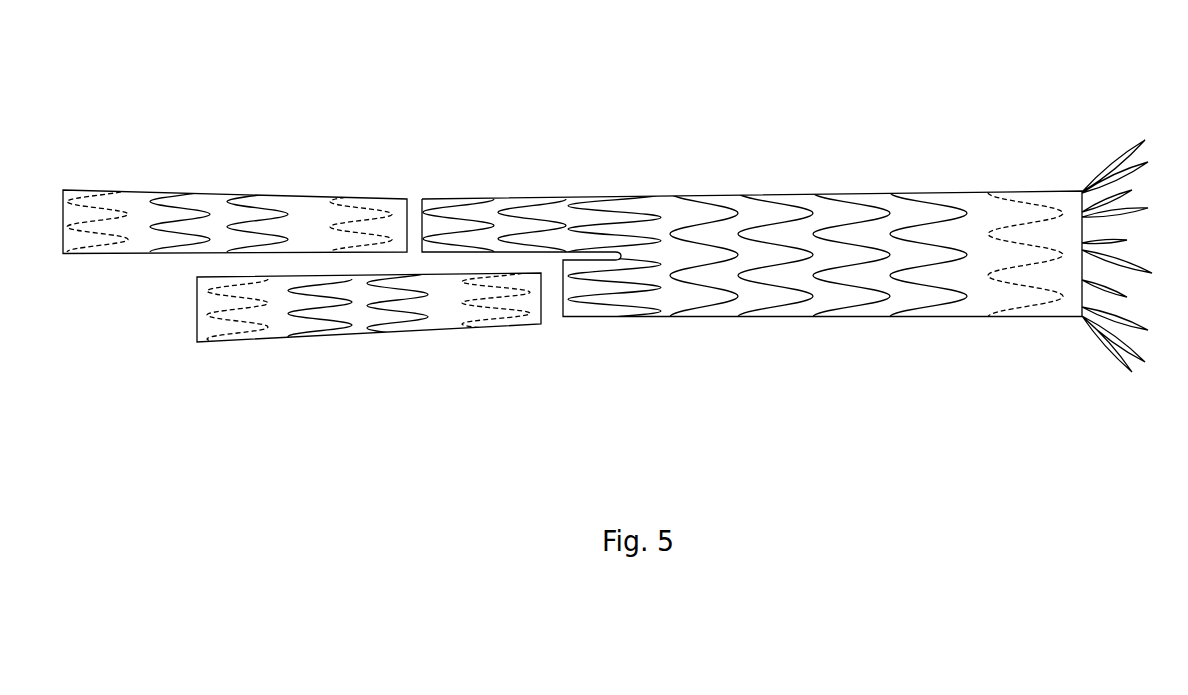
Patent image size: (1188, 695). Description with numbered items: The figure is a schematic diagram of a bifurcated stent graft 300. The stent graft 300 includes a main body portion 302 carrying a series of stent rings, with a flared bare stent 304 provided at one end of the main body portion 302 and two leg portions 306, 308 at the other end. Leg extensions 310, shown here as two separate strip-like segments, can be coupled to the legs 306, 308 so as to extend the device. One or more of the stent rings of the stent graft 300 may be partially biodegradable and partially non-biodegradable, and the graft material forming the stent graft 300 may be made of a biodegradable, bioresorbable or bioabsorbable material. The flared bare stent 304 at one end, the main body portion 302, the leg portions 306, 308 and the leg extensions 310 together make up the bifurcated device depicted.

The bifurcated stent graft 300 is at (607, 234).
The main body 302 is at (800, 319).
The flared bare stent 304 is at (1084, 164).
The leg portion 306 is at (582, 321).
The leg portion 308 is at (528, 194).
The leg extensions 310 is at (343, 273).